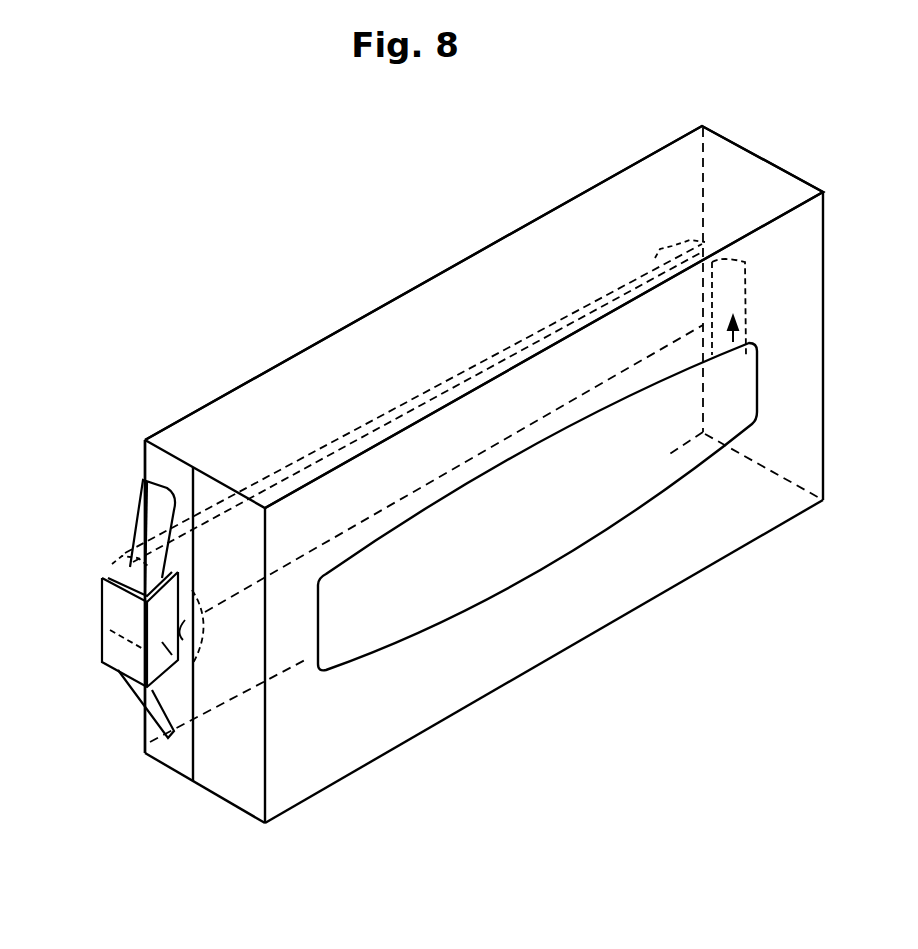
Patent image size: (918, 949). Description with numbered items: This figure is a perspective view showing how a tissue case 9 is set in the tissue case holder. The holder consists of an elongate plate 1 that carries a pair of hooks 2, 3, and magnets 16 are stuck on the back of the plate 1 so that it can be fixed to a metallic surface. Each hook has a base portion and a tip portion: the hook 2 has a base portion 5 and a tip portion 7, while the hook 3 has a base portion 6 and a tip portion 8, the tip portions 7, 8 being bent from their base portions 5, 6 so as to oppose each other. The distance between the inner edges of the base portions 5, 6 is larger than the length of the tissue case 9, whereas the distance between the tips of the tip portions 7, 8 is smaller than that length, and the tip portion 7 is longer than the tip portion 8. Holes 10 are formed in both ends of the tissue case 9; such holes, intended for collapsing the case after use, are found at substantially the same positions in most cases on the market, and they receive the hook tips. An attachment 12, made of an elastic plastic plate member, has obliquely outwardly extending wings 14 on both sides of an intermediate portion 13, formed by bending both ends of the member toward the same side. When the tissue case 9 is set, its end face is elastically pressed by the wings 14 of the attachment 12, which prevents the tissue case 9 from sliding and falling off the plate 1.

The elongate plate 1 is at (383, 402).
The hook 2 is at (172, 662).
The hook 3 is at (742, 365).
The base portion 5 is at (110, 627).
The base portion 6 is at (705, 262).
The tip portion 7 is at (178, 606).
The tip portion 8 is at (727, 290).
The tissue case 9 is at (487, 292).
The hole 10 is at (748, 328).
The attachment 12 is at (122, 530).
The intermediate portion 13 is at (122, 643).
The wing 14 is at (150, 512).
The magnet 16 is at (660, 252).